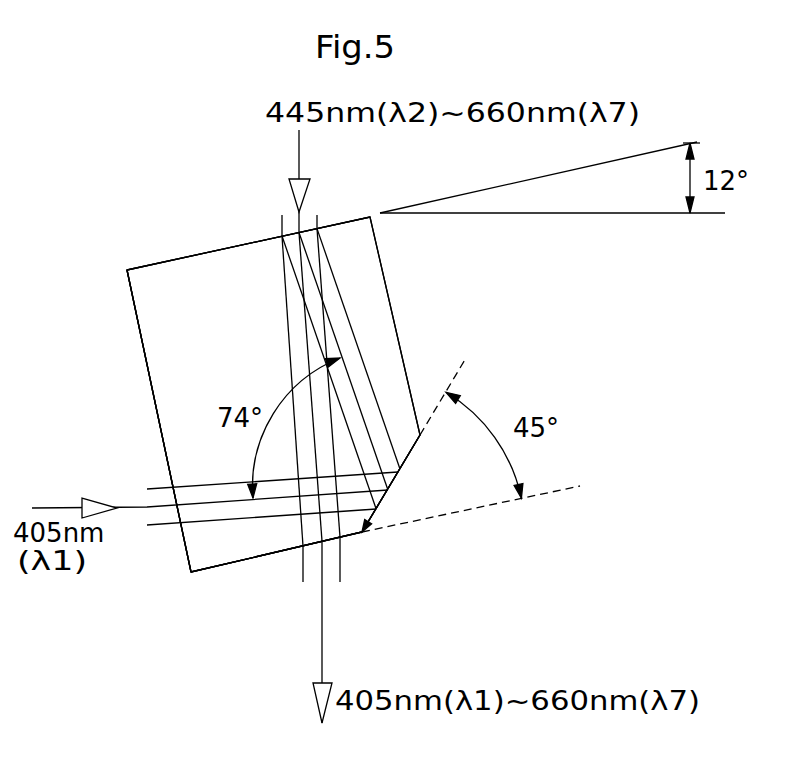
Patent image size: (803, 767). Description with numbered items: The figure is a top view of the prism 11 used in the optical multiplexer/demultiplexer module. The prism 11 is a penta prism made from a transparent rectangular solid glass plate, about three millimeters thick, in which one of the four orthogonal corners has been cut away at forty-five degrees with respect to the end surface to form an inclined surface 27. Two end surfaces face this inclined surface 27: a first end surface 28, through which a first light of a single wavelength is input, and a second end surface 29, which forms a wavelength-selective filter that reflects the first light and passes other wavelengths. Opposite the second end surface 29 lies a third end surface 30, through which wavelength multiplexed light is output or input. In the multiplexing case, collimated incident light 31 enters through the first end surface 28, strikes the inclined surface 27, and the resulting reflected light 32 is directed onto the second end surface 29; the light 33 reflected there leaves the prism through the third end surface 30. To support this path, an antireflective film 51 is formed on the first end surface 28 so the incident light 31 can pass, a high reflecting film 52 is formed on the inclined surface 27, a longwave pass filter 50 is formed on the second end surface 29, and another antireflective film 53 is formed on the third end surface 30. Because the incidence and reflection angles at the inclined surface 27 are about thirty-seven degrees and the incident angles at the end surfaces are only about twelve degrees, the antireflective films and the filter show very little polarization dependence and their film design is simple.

The prism 11 is at (177, 258).
The inclined surface 27 is at (373, 515).
The first end surface 28 is at (150, 388).
The second end surface 29 is at (247, 245).
The third end surface 30 is at (220, 565).
The incident light 31 is at (60, 505).
The reflected light 32 is at (350, 380).
The reflected light 33 is at (304, 326).
The longwave pass filter 50 is at (145, 267).
The antireflective film 51 is at (136, 315).
The high reflecting film 52 is at (406, 458).
The antireflective film 53 is at (263, 556).